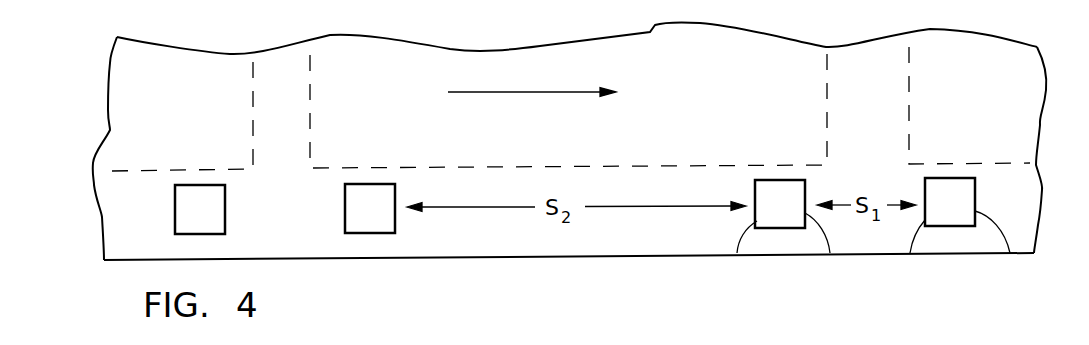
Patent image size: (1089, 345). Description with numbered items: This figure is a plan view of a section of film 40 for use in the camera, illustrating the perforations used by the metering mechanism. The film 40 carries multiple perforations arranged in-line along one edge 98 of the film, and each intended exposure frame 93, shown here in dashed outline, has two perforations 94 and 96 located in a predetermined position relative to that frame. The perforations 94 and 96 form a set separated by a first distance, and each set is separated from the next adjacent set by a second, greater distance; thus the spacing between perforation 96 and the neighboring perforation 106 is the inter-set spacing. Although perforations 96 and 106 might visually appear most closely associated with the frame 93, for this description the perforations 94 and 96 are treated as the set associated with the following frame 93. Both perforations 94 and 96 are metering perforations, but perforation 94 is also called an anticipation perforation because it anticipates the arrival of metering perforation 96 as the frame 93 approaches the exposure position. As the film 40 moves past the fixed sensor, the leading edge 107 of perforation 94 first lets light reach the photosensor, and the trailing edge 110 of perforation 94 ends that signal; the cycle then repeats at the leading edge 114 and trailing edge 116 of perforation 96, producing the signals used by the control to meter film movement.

The film 40 is at (502, 68).
The exposure frame 93 is at (607, 167).
The film edge 98 is at (1028, 211).
The perforation 106 is at (378, 222).
The metering perforation 96 is at (783, 228).
The anticipation perforation 94 is at (958, 226).
The trailing edge of perforation 96 116 is at (737, 253).
The leading edge of perforation 96 114 is at (830, 253).
The trailing edge of perforation 94 110 is at (910, 253).
The leading edge of perforation 94 107 is at (1010, 253).